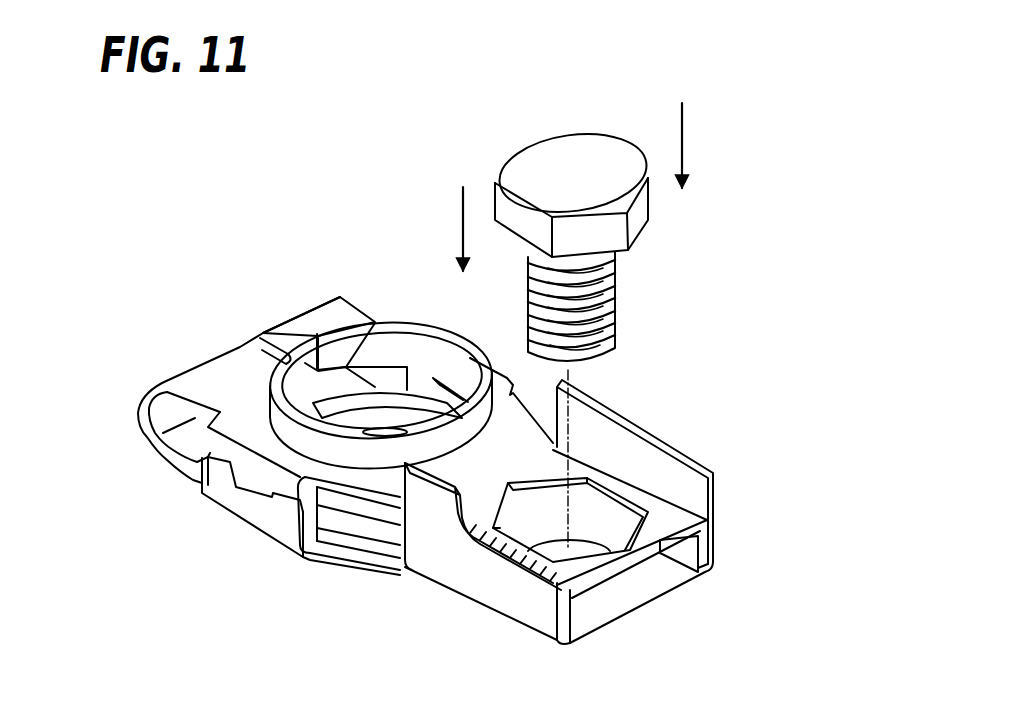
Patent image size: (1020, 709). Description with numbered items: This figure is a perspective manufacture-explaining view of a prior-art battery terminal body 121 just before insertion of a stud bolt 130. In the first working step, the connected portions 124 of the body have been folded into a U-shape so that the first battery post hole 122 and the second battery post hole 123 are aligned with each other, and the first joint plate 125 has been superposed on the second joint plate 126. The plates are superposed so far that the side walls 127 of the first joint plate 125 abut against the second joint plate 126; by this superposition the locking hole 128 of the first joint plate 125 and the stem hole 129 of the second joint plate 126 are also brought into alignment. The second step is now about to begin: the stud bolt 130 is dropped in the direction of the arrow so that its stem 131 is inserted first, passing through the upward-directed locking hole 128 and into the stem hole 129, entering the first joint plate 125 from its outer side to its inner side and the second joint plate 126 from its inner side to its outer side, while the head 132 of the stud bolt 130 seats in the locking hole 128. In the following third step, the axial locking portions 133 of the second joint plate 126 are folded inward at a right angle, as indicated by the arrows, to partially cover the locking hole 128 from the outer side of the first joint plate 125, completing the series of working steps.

The battery terminal body 121 is at (186, 322).
The first battery post hole 122 is at (385, 345).
The second battery post hole 123 is at (413, 410).
The connected portions 124 is at (178, 368).
The first joint plate 125 is at (549, 535).
The second joint plate 126 is at (651, 615).
The side walls 127 is at (702, 547).
The locking hole 128 is at (607, 550).
The stem hole 129 is at (563, 533).
The stud bolt 130 is at (613, 214).
The stem 131 is at (617, 315).
The head 132 is at (580, 160).
The axial locking portions 133 is at (688, 455).